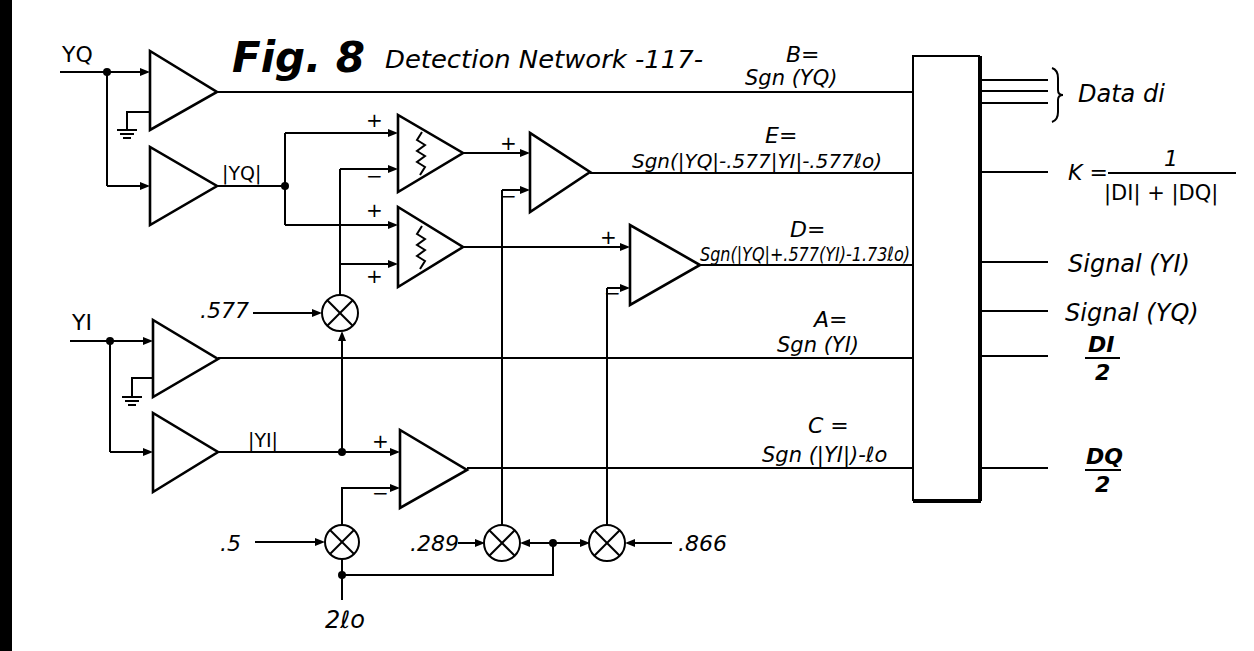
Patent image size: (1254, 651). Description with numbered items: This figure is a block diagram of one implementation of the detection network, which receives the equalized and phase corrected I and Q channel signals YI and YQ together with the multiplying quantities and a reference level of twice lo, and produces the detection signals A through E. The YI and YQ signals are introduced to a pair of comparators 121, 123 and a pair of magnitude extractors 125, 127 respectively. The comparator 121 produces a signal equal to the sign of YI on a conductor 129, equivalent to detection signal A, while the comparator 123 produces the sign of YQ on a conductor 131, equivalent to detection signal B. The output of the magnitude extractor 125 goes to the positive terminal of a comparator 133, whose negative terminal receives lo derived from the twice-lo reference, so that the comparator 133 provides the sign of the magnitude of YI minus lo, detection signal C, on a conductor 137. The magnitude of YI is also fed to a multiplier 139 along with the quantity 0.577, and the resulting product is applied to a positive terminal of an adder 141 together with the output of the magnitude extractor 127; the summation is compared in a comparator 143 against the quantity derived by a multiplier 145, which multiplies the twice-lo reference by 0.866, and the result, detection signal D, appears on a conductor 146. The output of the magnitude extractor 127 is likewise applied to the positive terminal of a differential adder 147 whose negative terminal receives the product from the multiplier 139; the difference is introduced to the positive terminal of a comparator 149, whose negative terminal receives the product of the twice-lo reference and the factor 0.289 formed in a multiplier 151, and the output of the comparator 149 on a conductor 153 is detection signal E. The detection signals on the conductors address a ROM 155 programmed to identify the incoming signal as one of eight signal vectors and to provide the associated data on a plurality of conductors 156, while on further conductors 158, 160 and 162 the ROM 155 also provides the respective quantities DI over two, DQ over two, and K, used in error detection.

The comparator 123 is at (195, 78).
The magnitude extractor 127 is at (204, 178).
The differential adder 147 is at (468, 118).
The adder 141 is at (420, 222).
The comparator 149 is at (560, 150).
The comparator 143 is at (680, 248).
The conductor 131 is at (630, 95).
The conductor 153 is at (650, 177).
The conductor 146 is at (750, 270).
The conductor 129 is at (683, 361).
The comparator 121 is at (180, 338).
The magnitude extractor 125 is at (183, 430).
The multiplier 139 is at (356, 323).
The comparator 133 is at (442, 456).
The conductor 137 is at (670, 466).
The multiplier 151 is at (512, 527).
The multiplier 145 is at (613, 526).
The ROM 155 is at (954, 502).
The plurality of conductors 156 is at (1012, 105).
The conductor 162 is at (1000, 172).
The conductor 158 is at (992, 356).
The conductor 160 is at (999, 468).